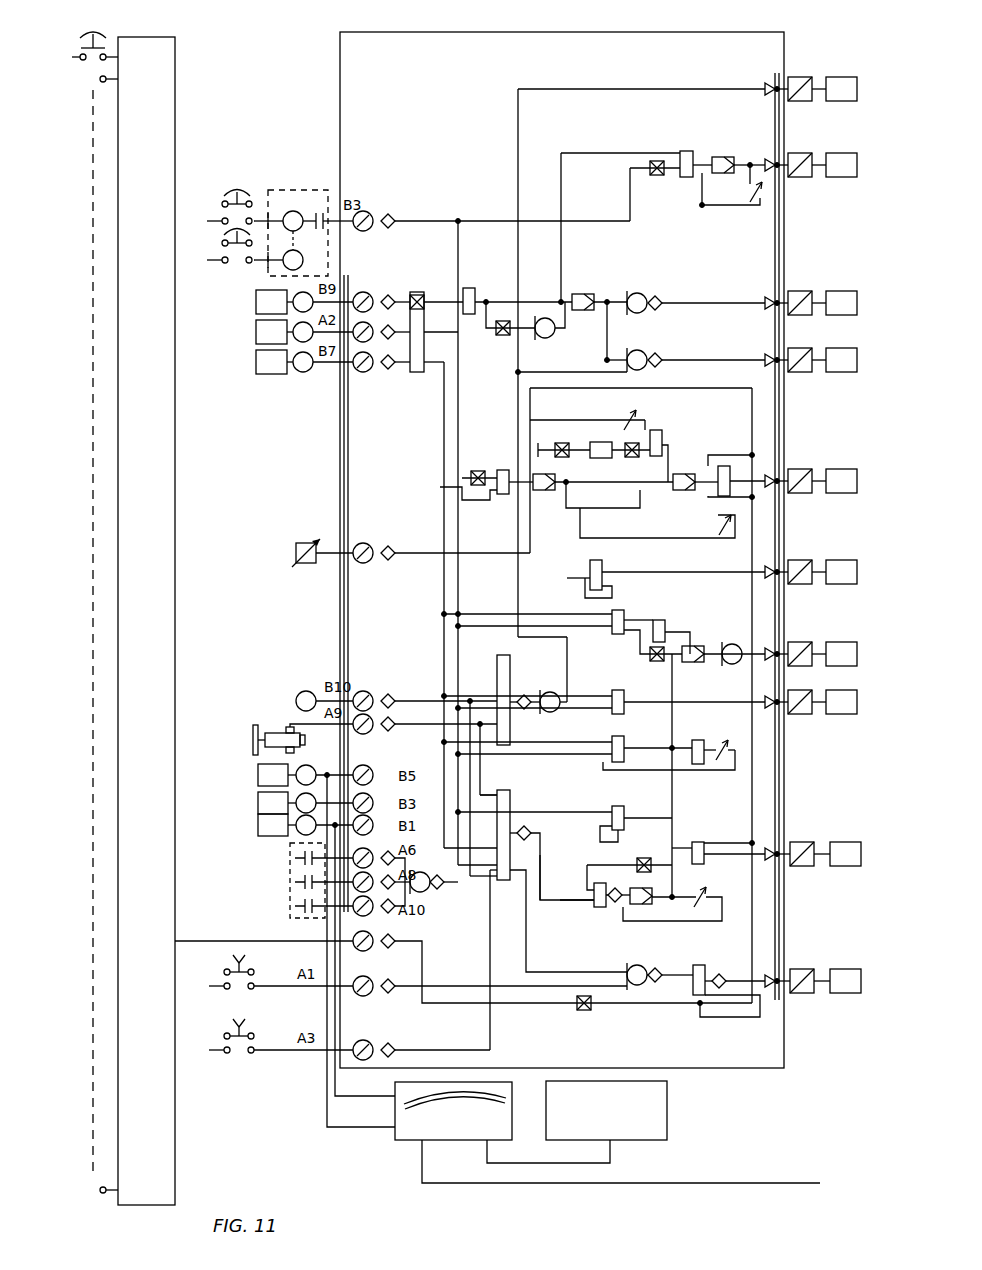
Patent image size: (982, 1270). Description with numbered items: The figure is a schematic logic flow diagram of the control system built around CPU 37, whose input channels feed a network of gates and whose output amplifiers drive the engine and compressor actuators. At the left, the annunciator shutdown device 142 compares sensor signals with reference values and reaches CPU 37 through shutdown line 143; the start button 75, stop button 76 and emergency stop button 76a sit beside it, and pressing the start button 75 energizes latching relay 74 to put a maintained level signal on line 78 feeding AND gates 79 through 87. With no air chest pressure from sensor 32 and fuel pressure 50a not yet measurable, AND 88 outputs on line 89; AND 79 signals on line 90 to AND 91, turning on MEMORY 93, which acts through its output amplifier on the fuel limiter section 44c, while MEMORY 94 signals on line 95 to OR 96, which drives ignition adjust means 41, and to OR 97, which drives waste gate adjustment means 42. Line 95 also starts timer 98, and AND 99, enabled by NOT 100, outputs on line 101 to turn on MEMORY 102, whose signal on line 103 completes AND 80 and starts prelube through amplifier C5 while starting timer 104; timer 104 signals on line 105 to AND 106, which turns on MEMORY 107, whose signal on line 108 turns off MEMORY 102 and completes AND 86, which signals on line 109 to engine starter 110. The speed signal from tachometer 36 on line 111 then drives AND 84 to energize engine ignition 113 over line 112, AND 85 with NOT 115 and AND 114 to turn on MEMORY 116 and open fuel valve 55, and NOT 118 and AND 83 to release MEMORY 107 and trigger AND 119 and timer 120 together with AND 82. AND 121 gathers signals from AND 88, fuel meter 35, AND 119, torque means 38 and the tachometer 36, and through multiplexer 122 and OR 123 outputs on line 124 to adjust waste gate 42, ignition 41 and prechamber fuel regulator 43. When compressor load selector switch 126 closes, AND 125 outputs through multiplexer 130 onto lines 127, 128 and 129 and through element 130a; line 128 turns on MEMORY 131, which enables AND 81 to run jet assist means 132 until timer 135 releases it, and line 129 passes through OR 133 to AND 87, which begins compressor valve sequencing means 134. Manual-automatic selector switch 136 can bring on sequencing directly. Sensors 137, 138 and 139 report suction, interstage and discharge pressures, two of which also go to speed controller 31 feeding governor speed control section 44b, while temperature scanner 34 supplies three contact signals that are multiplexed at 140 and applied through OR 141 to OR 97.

The annunciator shutdown device 142 is at (166, 609).
The emergency stop button 76a is at (120, 33).
The latching relay 74 is at (311, 210).
The start button 75 is at (222, 218).
The stop button 76 is at (222, 257).
The CPU 37 is at (415, 58).
The line 78 is at (405, 218).
The air chest pressure sensor 32 is at (252, 302).
The fuel pressure sensor 50a is at (252, 360).
The AND gate 88 is at (432, 330).
The line 89 is at (428, 292).
The AND gate 79 is at (470, 290).
The line 124 is at (543, 95).
The line 90 is at (525, 292).
The memory 94 is at (582, 292).
The line 95 is at (600, 340).
The OR gate 96 is at (646, 302).
The OR gate 97 is at (650, 370).
The AND gate 91 is at (686, 150).
The memory 93 is at (718, 157).
The engine tachometer 36 is at (300, 540).
The line 111 is at (528, 762).
The NOT gate 118 is at (470, 474).
The AND gate 106 is at (505, 466).
The memory 107 is at (534, 492).
The NOT gate 100 is at (640, 456).
The timer 98 is at (640, 418).
The AND gate 99 is at (664, 438).
The line 101 is at (676, 460).
The memory 102 is at (686, 492).
The AND gate 80 is at (716, 466).
The line 103 is at (714, 452).
The line 108 is at (634, 496).
The line 105 is at (634, 540).
The timer 104 is at (717, 537).
The AND gate 86 is at (590, 574).
The line 109 is at (648, 575).
The AND gate 121 is at (494, 660).
The multiplexer 122 is at (524, 692).
The OR gate 123 is at (556, 686).
The AND gate 85 is at (622, 612).
The AND gate 114 is at (664, 624).
The NOT gate 115 is at (650, 658).
The memory 116 is at (686, 646).
The AND gate 84 is at (624, 696).
The line 112 is at (718, 702).
The AND gate 83 is at (624, 736).
The AND gate 119 is at (706, 738).
The timer 120 is at (726, 744).
The AND gate 125 is at (512, 808).
The line 127 is at (520, 780).
The input element 130a is at (530, 832).
The AND gate 82 is at (624, 812).
The AND gate 81 is at (710, 850).
The line 129 is at (542, 866).
The line 128 is at (570, 900).
The multiplexer / AND gate 130 is at (602, 908).
The memory 131 is at (638, 888).
The timer 135 is at (700, 888).
The OR gate 133 is at (640, 964).
The AND gate 87 is at (702, 966).
The shutdown line 143 is at (228, 940).
The compressor manual-automatic selector switch 136 is at (228, 978).
The compressor load selector switch 126 is at (228, 1046).
The fuel meter 35 is at (296, 700).
The torque means 38 is at (242, 744).
The compressor suction pressure sensor 137 is at (256, 775).
The interstage compression pressure sensor 138 is at (256, 802).
The compressor discharge pressure sensor 139 is at (256, 826).
The temperature scanner 34 is at (284, 872).
The multiplexer 140 is at (420, 862).
The OR gate 141 is at (434, 892).
The speed controller 31 is at (392, 1145).
The governor speed control section 44b is at (672, 1124).
The prechamber fuel regulator 43 is at (844, 76).
The fuel limiter section of governor 44c is at (844, 154).
The ignition adjust means 41 is at (838, 318).
The waste gate adjustment means 42 is at (846, 372).
The output amplifier C5 is at (811, 471).
The engine starter 110 is at (846, 560).
The fuel valve 55 is at (842, 642).
The engine ignition 113 is at (842, 714).
The jet assist means 132 is at (846, 842).
The compressor valve sequencing means 134 is at (843, 969).